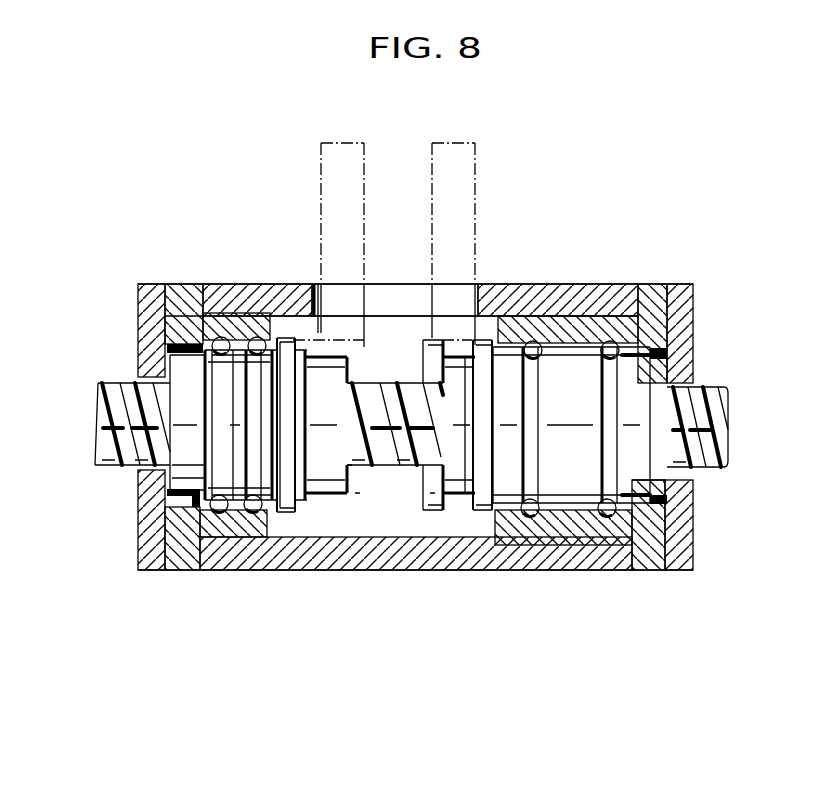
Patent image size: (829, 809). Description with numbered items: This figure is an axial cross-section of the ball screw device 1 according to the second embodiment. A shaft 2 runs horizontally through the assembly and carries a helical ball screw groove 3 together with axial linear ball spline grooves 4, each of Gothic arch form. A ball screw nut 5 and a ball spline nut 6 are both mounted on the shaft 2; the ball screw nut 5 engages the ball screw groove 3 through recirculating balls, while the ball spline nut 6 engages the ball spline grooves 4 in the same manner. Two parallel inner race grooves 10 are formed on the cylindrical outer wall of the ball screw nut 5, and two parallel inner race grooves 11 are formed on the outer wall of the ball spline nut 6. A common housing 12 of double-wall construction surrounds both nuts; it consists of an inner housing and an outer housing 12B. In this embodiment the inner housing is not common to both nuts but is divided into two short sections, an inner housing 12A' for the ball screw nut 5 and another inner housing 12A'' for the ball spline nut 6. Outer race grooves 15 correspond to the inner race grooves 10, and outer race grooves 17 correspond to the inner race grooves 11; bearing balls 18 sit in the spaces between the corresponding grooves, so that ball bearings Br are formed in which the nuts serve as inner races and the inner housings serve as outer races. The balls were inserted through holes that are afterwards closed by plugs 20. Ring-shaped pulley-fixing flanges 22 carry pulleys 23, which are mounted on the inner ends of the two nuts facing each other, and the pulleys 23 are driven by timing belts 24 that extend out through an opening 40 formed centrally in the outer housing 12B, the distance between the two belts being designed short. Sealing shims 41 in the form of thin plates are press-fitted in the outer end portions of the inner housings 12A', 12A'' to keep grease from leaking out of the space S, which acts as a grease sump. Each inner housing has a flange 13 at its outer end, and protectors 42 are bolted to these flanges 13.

The ball screw device 1 is at (565, 192).
The shaft 2 is at (103, 447).
The ball screw groove 3 is at (117, 393).
The ball spline grooves 4 is at (103, 428).
The ball screw nut 5 is at (175, 566).
The ball spline nut 6 is at (655, 486).
The inner race grooves 10 is at (258, 330).
The inner race grooves 11 is at (494, 516).
The housing 12 is at (305, 660).
The inner housing 12A' is at (233, 507).
The inner housing 12A'' is at (603, 501).
The outer housing 12B is at (300, 516).
The flange 13 is at (185, 284).
The outer race grooves 15 is at (228, 336).
The outer race grooves 17 is at (542, 514).
The bearing balls 18 is at (215, 338).
The plugs 20 is at (607, 290).
The pulley-fixing flanges 22 is at (298, 516).
The pulleys 23 is at (427, 517).
The timing belts 24 is at (440, 225).
The opening 40 is at (452, 285).
The sealing shims 41 is at (168, 345).
The protectors 42 is at (140, 296).
The ball bearings Br is at (183, 212).
The space S is at (404, 525).